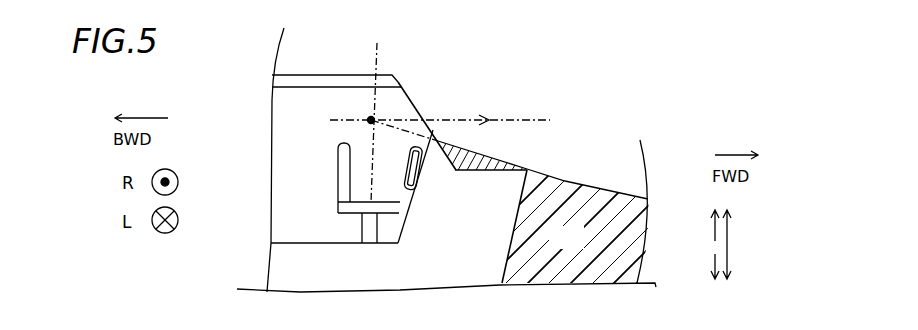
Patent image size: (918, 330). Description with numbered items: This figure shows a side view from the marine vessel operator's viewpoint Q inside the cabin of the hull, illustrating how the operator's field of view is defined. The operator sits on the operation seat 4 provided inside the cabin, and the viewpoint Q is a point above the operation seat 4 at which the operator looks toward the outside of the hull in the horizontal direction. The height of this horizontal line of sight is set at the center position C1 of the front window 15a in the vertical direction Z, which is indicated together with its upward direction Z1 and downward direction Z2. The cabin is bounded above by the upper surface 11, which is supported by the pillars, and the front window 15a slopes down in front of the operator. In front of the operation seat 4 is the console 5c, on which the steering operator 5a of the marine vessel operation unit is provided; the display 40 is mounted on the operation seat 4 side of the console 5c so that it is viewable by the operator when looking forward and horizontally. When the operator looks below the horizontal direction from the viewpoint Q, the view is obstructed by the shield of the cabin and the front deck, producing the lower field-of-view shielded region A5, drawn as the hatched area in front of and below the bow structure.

The operation seat 4 is at (399, 208).
The steering operator 5a is at (413, 180).
The console 5c is at (468, 148).
The upper surface of the cabin 11 is at (328, 75).
The front window 15a is at (412, 100).
The display 40 is at (428, 158).
The lower field-of-view shielded region A5 is at (619, 224).
The center position of the front window C1 is at (424, 127).
The marine vessel operator's viewpoint Q is at (384, 119).
The vertical direction Z is at (734, 244).
The upward direction Z1 is at (703, 225).
The downward direction Z2 is at (703, 266).